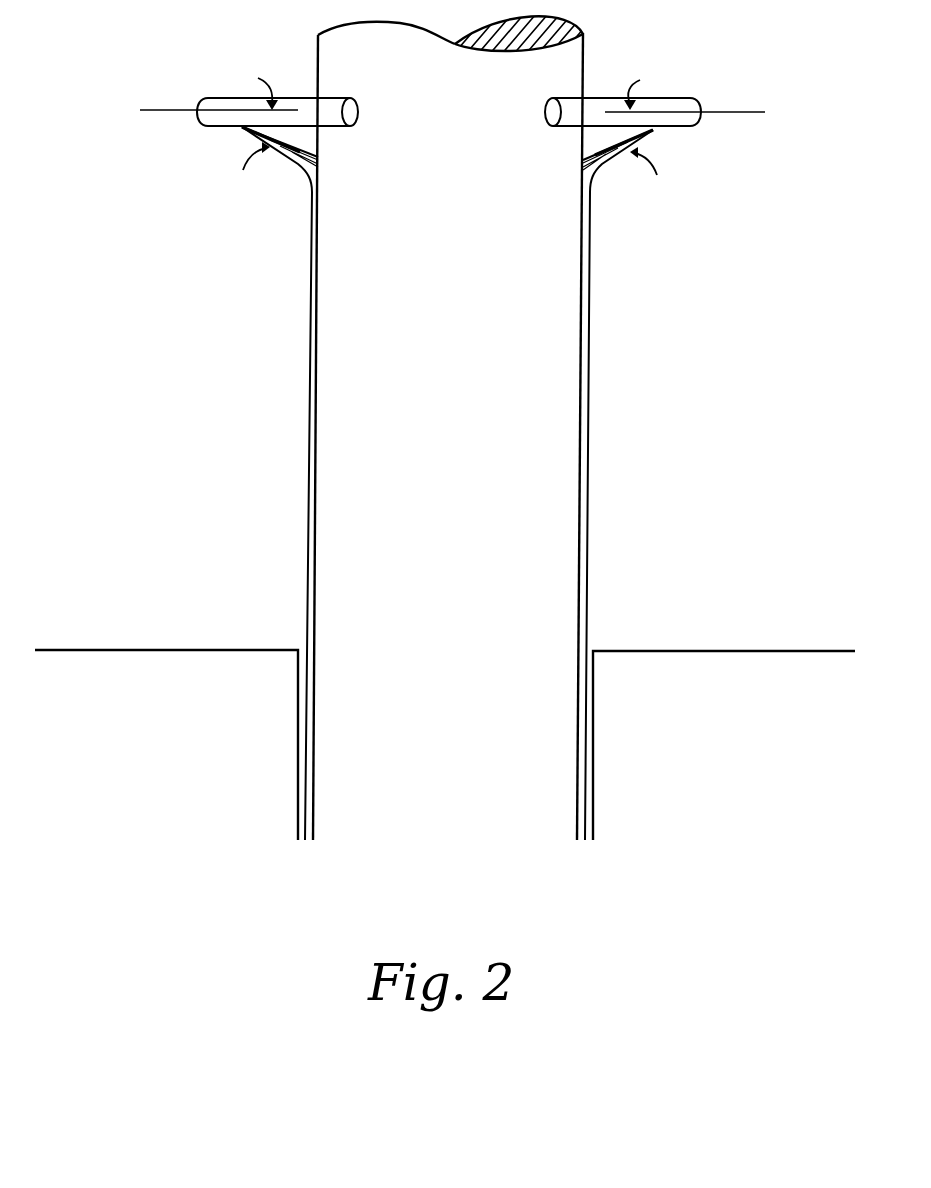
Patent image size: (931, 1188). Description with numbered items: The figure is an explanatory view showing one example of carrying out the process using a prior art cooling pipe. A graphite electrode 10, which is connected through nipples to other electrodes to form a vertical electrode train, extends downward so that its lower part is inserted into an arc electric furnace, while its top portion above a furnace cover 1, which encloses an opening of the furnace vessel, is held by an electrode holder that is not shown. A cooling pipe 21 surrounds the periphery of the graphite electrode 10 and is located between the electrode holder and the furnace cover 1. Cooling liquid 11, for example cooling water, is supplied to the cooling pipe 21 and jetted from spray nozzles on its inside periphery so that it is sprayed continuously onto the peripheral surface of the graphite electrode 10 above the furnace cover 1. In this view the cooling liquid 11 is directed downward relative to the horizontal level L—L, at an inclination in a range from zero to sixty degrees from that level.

The furnace cover 1 is at (163, 666).
The graphite electrode 10 is at (553, 407).
The cooling liquid 11 is at (311, 172).
The cooling pipe 21 is at (670, 108).
The horizontal level L is at (451, 113).